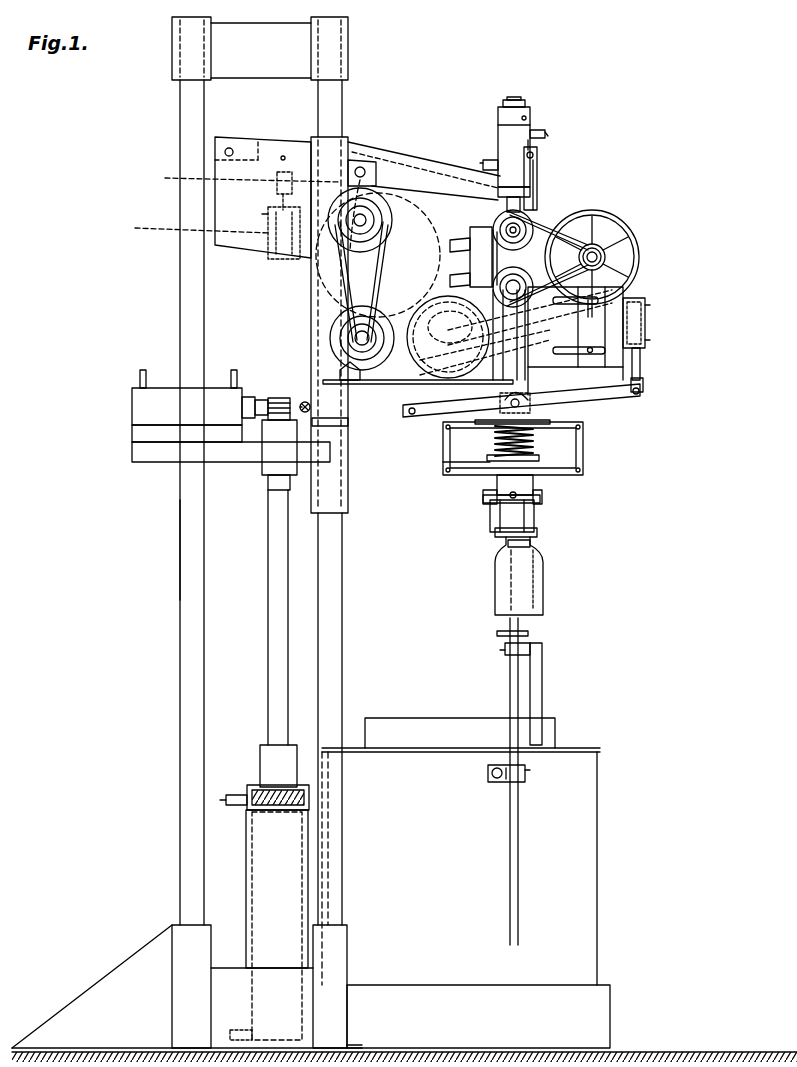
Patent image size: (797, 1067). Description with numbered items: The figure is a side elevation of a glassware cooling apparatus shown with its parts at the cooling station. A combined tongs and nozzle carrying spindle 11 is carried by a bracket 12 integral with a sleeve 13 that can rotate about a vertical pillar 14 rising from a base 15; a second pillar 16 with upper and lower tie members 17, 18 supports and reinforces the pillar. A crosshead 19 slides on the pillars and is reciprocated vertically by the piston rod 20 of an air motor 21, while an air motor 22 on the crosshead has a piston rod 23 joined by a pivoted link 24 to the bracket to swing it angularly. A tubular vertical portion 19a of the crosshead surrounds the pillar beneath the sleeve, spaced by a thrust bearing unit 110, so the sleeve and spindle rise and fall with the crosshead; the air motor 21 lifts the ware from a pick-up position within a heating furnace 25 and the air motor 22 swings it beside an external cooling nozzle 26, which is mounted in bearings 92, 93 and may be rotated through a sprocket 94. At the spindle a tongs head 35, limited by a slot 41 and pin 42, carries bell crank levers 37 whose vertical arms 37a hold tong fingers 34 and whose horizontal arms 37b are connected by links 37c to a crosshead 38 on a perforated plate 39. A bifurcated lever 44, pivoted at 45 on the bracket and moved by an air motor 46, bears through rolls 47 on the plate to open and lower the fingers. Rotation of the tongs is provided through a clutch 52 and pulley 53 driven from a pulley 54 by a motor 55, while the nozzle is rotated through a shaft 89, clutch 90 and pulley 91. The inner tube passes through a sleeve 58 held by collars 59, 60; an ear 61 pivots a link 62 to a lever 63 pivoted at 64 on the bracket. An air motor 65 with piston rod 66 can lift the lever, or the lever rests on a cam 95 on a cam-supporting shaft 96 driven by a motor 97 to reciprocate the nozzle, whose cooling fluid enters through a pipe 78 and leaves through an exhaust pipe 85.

The spindle 11 is at (518, 133).
The bracket 12 is at (432, 205).
The sleeve 13 is at (345, 145).
The vertical pillar 14 is at (330, 88).
The base 15 is at (332, 1031).
The second pillar 16 is at (186, 560).
The upper tie member 17 is at (248, 62).
The lower tie member 18 is at (218, 1005).
The crosshead 19 is at (242, 452).
The tubular vertical portion 19a is at (348, 485).
The piston rod 20 is at (268, 652).
The air motor 21 is at (268, 858).
The air motor 22 is at (132, 407).
The piston rod 23 is at (268, 398).
The pivoted link 24 is at (312, 407).
The heating furnace 25 is at (558, 728).
The external cooling nozzle 26 is at (545, 610).
The tong fingers 34 is at (540, 540).
The tongs head 35 is at (548, 503).
The bell crank levers 37 is at (540, 478).
The vertical arms 37a is at (540, 500).
The horizontal arms 37b is at (478, 470).
The links 37c is at (583, 455).
The crosshead 38 is at (475, 433).
The perforated plate 39 is at (550, 421).
The slot 41 is at (482, 498).
The pin 42 is at (508, 498).
The bifurcated lever 44 is at (600, 400).
The pivot 45 is at (410, 422).
The air motor 46 is at (650, 318).
The rolls 47 is at (525, 390).
The clutch 52 is at (630, 225).
The pulley 53 is at (498, 280).
The pulley 54 is at (606, 250).
The motor 55 is at (428, 297).
The sleeve 58 is at (497, 128).
The collar 59 is at (520, 215).
The collar 60 is at (512, 97).
The ear 61 is at (538, 155).
The link 62 is at (540, 168).
The lever 63 is at (395, 170).
The pivot 64 is at (225, 152).
The air motor 65 is at (200, 233).
The piston rod 66 is at (240, 189).
The pipe 78 is at (482, 160).
The exhaust pipe 85 is at (545, 131).
The shaft 89 is at (525, 215).
The clutch 90 is at (603, 228).
The pulley 91 is at (470, 230).
The bearing 92 is at (505, 782).
The bearing 93 is at (363, 166).
The sprocket 94 is at (530, 633).
The cam 95 is at (400, 165).
The cam-supporting shaft 96 is at (358, 225).
The motor 97 is at (500, 335).
The thrust bearing unit 110 is at (335, 425).